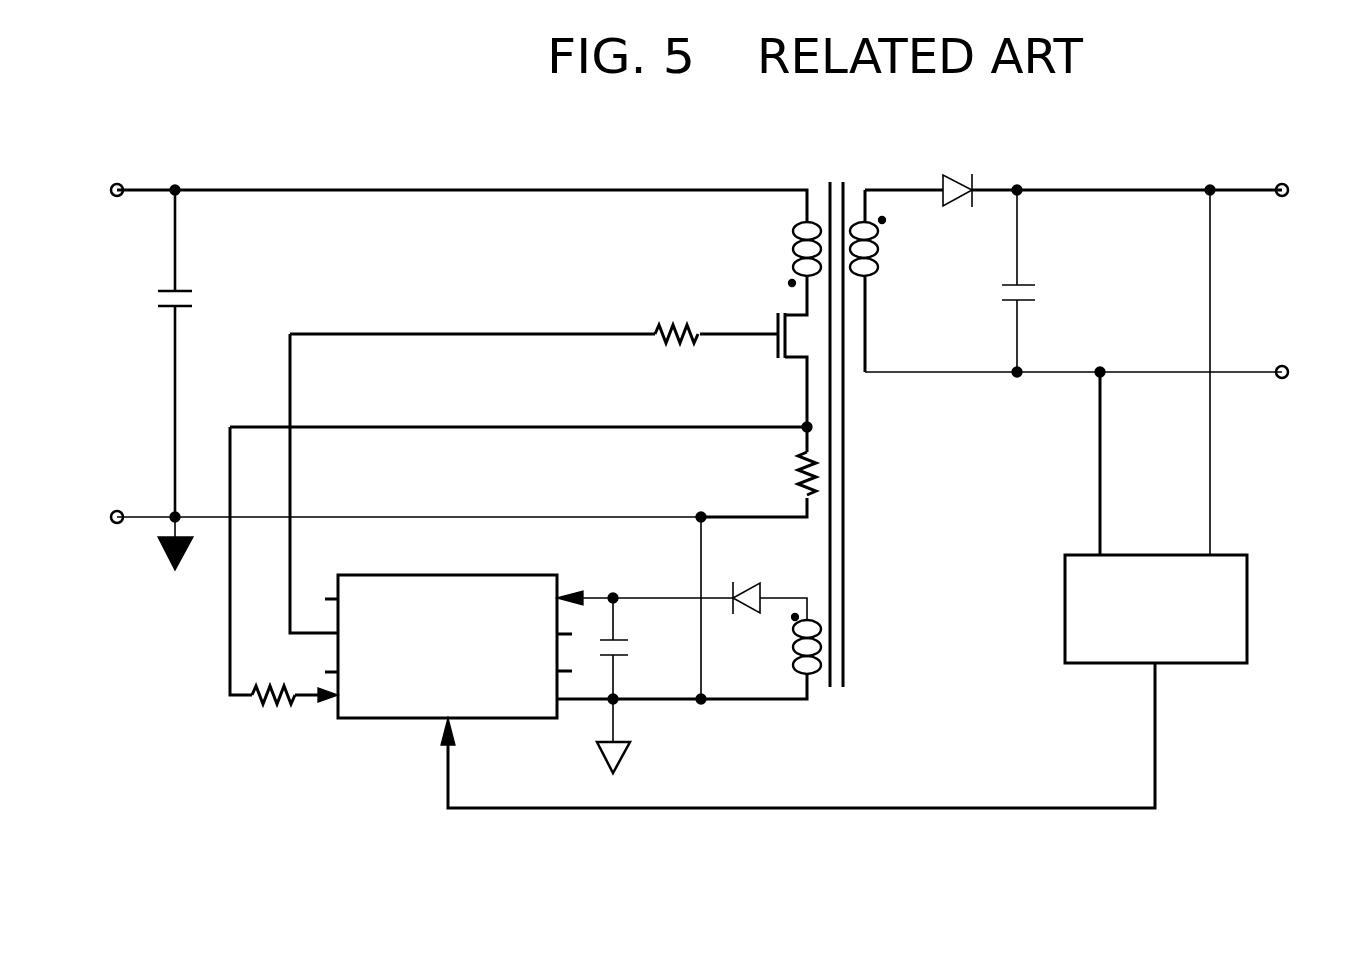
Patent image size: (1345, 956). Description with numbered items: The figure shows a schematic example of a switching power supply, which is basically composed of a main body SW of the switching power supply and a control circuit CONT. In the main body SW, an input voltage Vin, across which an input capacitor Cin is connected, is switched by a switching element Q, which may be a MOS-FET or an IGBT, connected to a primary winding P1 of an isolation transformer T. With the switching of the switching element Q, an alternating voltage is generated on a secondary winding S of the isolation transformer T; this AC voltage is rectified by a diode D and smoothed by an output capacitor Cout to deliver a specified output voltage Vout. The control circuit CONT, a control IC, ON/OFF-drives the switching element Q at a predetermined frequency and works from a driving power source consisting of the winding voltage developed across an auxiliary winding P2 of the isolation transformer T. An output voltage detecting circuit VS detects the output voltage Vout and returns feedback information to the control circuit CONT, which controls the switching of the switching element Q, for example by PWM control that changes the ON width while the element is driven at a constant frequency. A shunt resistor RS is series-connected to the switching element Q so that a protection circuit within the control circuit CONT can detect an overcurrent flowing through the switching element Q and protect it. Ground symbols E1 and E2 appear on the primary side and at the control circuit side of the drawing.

The input voltage Vin is at (125, 212).
The output voltage Vout is at (1276, 281).
The input capacitor Cin is at (211, 353).
The output capacitor Cout is at (980, 281).
The isolation transformer T is at (837, 412).
The primary winding P1 is at (785, 254).
The auxiliary winding P2 is at (777, 628).
The secondary winding S is at (878, 247).
The switching element Q is at (720, 329).
The shunt resistor RS is at (774, 458).
The diode D is at (957, 170).
The control circuit CONT is at (479, 642).
The output voltage detecting circuit VS is at (1235, 553).
The main body of the switching power supply SW is at (915, 466).
The primary-side ground E1 is at (152, 540).
The secondary ground of control circuit E2 is at (638, 736).